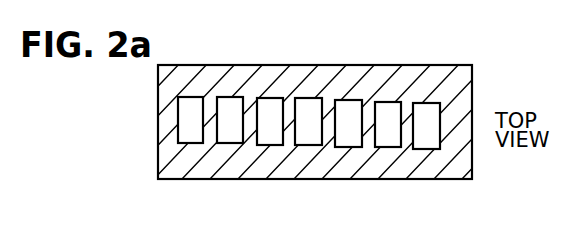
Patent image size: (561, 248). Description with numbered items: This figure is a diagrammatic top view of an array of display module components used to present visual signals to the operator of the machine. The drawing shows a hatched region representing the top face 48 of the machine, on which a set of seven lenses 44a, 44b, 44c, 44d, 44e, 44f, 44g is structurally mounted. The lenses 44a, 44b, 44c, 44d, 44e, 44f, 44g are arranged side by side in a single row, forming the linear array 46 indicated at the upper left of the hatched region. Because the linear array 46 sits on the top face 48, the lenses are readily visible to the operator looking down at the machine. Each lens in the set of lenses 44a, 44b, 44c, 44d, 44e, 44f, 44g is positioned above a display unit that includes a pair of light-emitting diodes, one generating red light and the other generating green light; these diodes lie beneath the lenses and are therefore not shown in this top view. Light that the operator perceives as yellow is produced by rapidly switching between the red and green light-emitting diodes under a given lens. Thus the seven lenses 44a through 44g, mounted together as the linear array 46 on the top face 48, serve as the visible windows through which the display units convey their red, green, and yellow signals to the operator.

The linear array 46 is at (188, 64).
The top face 48 is at (444, 78).
The lens 44a is at (186, 143).
The lens 44b is at (231, 97).
The lens 44c is at (268, 145).
The lens 44d is at (308, 98).
The lens 44e is at (352, 147).
The lens 44f is at (387, 102).
The lens 44g is at (428, 149).